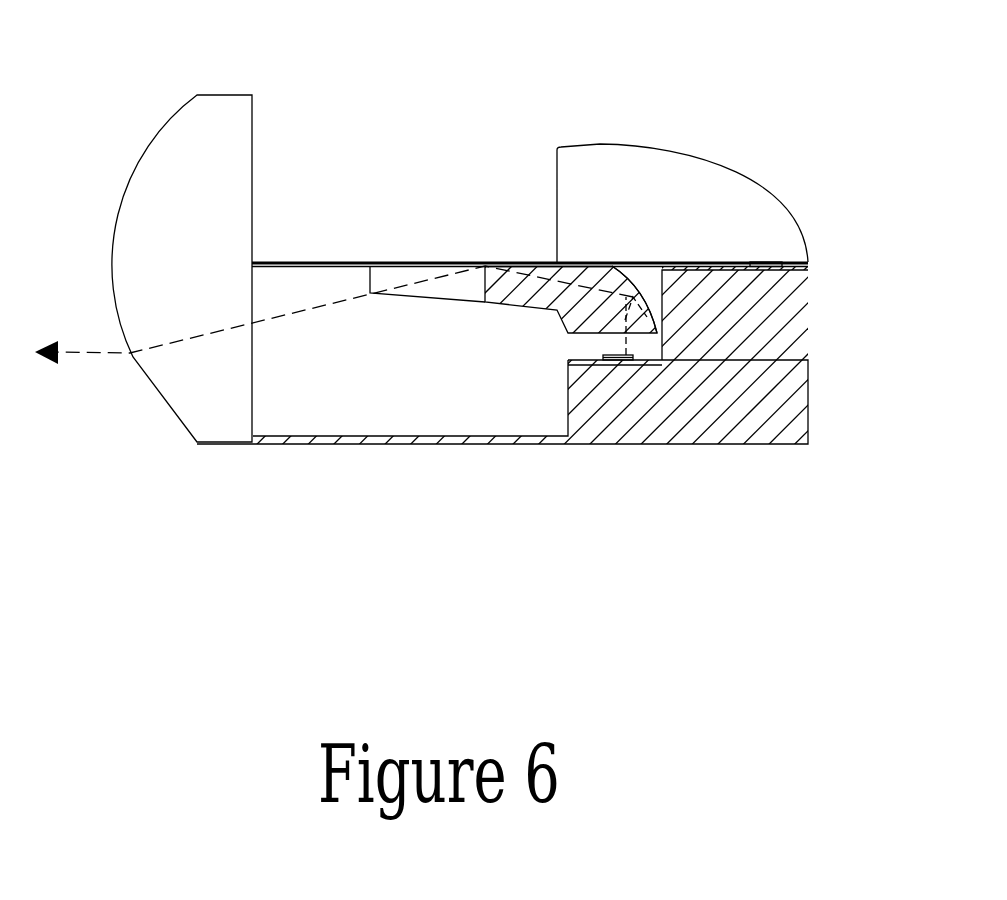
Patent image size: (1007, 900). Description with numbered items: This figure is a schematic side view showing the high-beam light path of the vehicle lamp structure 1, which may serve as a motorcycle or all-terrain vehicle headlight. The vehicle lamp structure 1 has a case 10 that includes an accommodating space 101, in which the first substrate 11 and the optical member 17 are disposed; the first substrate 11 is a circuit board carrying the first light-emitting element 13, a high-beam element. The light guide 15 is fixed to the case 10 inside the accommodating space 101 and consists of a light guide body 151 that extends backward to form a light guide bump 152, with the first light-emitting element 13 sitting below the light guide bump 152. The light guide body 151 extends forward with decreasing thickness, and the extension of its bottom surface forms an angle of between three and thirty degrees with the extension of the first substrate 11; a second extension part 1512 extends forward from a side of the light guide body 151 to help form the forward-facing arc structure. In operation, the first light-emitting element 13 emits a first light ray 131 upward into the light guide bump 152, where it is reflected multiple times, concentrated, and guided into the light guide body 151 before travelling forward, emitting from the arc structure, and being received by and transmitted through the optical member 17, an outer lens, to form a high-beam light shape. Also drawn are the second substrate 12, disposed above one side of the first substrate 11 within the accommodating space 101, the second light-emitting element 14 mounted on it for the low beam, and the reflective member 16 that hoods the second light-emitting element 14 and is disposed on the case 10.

The vehicle lamp structure 1 is at (470, 78).
The case 10 is at (683, 440).
The accommodating space 101 is at (285, 283).
The first substrate 11 is at (578, 352).
The second substrate 12 is at (730, 273).
The first light-emitting element 13 is at (612, 365).
The first light ray 131 is at (83, 353).
The second light-emitting element 14 is at (785, 265).
The light guide 15 is at (533, 240).
The light guide body 151 is at (518, 267).
The light guide bump 152 is at (583, 317).
The second extension part 1512 is at (400, 293).
The reflective member 16 is at (643, 190).
The optical member 17 is at (193, 133).